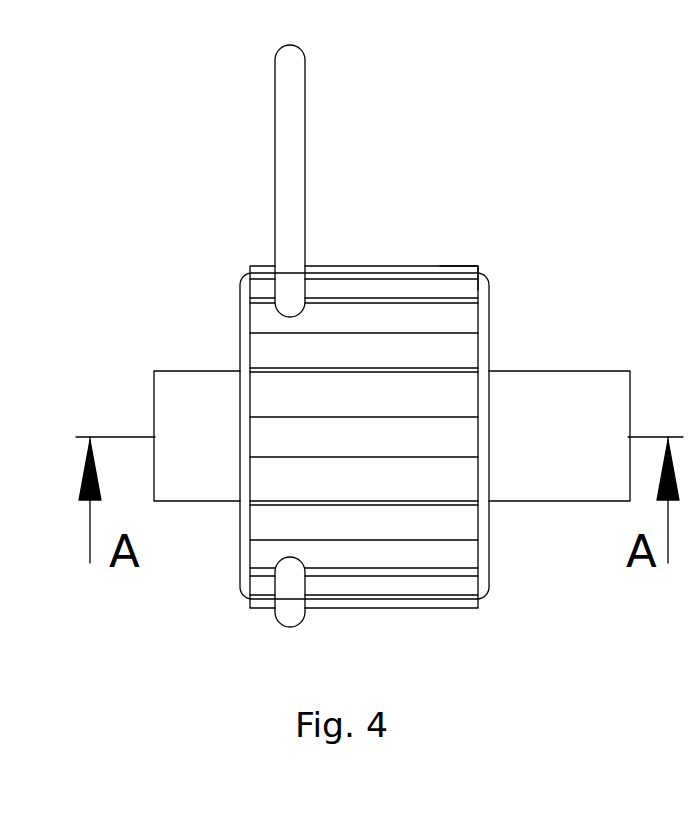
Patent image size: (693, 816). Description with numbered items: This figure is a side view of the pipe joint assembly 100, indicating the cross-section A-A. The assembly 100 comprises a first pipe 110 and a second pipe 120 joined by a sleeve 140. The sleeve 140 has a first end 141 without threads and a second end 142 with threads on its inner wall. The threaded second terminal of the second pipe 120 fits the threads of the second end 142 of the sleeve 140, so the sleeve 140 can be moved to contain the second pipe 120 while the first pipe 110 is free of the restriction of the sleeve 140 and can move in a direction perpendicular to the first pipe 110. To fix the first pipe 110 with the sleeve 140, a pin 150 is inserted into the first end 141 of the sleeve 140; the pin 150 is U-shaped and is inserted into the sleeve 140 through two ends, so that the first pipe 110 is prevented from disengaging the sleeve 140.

The pipe joint assembly 100 is at (594, 49).
The first pipe 110 is at (197, 371).
The second pipe 120 is at (558, 371).
The sleeve 140 is at (342, 265).
The first end 141 is at (262, 268).
The second end 142 is at (468, 265).
The pin 150 is at (275, 110).